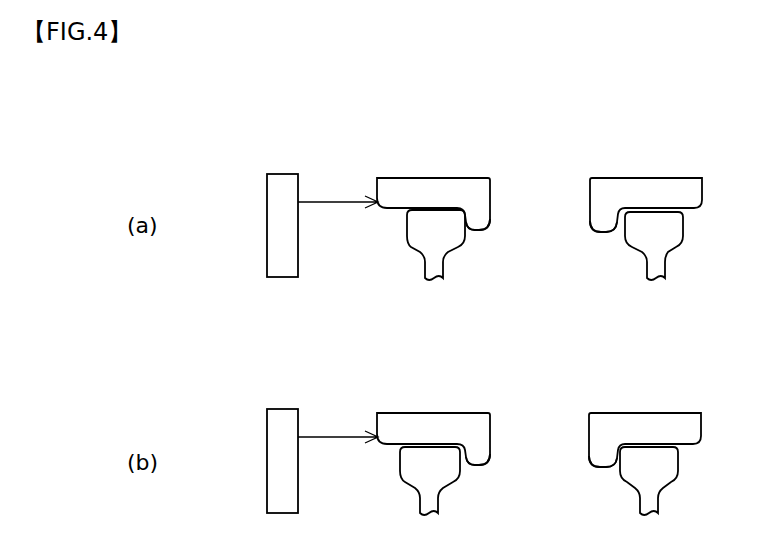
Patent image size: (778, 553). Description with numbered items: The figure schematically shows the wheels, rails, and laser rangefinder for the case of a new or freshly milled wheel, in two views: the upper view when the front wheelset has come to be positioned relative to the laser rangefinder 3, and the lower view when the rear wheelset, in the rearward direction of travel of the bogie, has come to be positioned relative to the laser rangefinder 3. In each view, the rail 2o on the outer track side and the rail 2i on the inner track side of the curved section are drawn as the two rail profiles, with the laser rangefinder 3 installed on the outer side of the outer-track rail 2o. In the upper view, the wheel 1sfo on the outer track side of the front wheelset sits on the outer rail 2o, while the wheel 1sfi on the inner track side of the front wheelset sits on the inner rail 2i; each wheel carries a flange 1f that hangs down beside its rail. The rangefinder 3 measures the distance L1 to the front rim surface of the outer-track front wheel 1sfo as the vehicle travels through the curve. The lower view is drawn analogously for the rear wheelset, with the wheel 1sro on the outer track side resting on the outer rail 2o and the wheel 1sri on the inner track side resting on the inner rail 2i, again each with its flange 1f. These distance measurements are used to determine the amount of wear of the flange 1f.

The laser rangefinder 3 is at (278, 224).
The distance L1 is at (338, 310).
The wheel on outer track side of front wheelset 1sfo is at (435, 190).
The wheel on inner track side of front wheelset 1sfi is at (647, 188).
The wheel on outer track side of rear wheelset 1sro is at (435, 425).
The wheel on inner track side of rear wheelset 1sri is at (647, 423).
The flange 1f is at (480, 227).
The rail on outer track side 2o is at (431, 243).
The rail on inner track side 2i is at (665, 243).